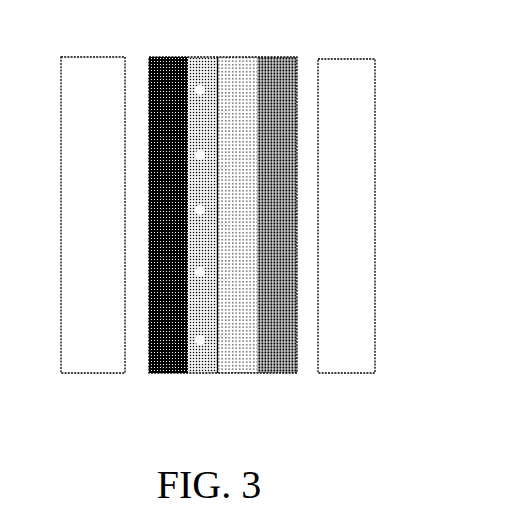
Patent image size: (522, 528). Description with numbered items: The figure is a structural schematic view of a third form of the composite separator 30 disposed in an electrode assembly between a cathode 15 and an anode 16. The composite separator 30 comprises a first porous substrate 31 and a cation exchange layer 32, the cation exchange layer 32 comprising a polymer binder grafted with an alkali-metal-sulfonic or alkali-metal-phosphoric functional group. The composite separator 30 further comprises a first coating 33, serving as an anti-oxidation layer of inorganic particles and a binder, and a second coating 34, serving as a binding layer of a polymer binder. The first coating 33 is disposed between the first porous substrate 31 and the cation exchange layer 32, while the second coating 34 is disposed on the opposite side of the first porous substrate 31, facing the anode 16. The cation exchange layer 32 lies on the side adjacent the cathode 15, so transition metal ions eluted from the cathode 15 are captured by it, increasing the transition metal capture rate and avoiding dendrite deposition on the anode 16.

The cathode 15 is at (83, 222).
The anode 16 is at (336, 229).
The composite separator 30 is at (223, 213).
The first porous substrate 31 is at (238, 52).
The cation exchange layer 32 is at (168, 52).
The first coating 33 is at (203, 52).
The second coating 34 is at (277, 52).